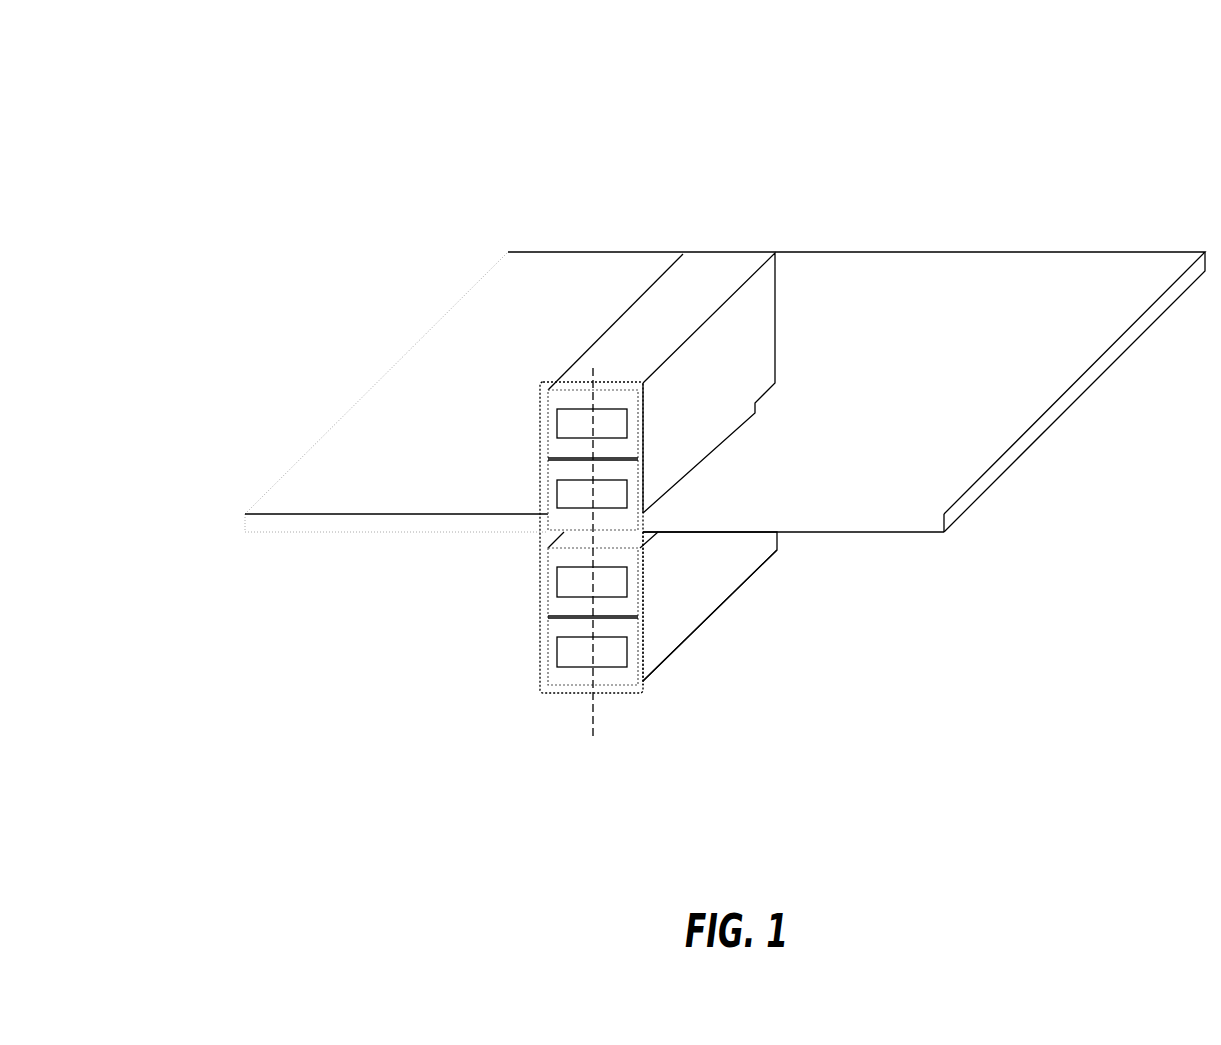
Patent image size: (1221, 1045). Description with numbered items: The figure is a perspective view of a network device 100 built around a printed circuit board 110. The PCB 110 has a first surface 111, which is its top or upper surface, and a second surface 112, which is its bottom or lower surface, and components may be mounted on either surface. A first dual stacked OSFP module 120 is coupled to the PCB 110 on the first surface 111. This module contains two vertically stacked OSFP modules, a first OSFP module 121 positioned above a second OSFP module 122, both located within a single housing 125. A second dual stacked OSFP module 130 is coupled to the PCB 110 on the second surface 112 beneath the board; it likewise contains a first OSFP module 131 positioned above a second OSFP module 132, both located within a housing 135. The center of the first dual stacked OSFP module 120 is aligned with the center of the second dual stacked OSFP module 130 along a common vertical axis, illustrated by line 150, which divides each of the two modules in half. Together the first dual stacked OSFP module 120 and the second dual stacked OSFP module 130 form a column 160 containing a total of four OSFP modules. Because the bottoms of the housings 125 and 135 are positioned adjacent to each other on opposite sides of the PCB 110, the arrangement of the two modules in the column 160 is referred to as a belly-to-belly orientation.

The network device 100 is at (244, 104).
The printed circuit board 110 is at (477, 284).
The first surface 111 is at (282, 509).
The second surface 112 is at (911, 535).
The first dual stacked OSFP module 120 is at (618, 348).
The housing 125 is at (647, 345).
The first OSFP module 121 is at (565, 449).
The second OSFP module 122 is at (565, 470).
The second dual stacked OSFP module 130 is at (666, 624).
The housing 135 is at (659, 643).
The first OSFP module 131 is at (565, 607).
The second OSFP module 132 is at (565, 628).
The line 150 is at (593, 720).
The column 160 is at (540, 563).